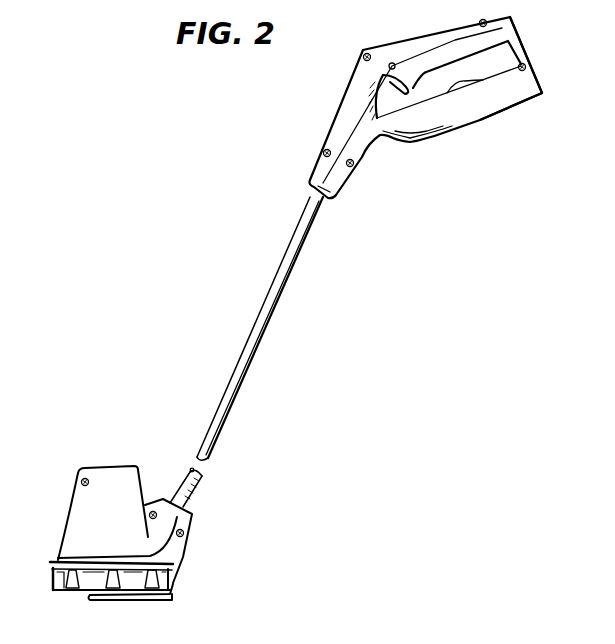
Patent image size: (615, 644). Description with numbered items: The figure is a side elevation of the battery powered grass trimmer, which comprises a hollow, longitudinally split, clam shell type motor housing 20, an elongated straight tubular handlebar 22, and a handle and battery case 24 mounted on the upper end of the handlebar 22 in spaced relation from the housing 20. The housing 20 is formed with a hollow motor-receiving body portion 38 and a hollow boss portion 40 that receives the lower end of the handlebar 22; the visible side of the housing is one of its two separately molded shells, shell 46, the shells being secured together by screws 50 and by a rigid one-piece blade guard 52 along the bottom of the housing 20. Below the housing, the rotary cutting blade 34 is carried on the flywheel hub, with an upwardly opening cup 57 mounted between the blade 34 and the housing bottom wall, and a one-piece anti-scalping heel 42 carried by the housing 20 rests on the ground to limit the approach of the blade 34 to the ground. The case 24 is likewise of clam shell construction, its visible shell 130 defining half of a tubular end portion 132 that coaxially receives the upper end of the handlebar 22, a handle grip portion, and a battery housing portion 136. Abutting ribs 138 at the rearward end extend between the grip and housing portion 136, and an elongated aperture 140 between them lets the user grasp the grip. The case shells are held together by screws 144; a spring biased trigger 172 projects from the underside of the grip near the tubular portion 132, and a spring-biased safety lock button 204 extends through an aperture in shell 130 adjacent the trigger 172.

The motor housing 20 is at (117, 463).
The handlebar 22 is at (249, 377).
The handle and battery case 24 is at (428, 142).
The rotary cutting blade 34 is at (80, 592).
The motor-receiving body portion 38 is at (78, 483).
The boss portion 40 is at (190, 523).
The anti-scalping heel 42 is at (128, 600).
The housing shell 46 is at (118, 520).
The screws 50 is at (85, 479).
The blade guard 52 is at (42, 573).
The cup 57 is at (97, 588).
The case shell 130 is at (352, 90).
The tubular end portion 132 is at (317, 178).
The battery housing portion 136 is at (494, 117).
The ribs 138 is at (524, 48).
The elongated aperture 140 is at (483, 80).
The screws 144 is at (365, 52).
The trigger 172 is at (384, 98).
The safety lock button 204 is at (393, 62).